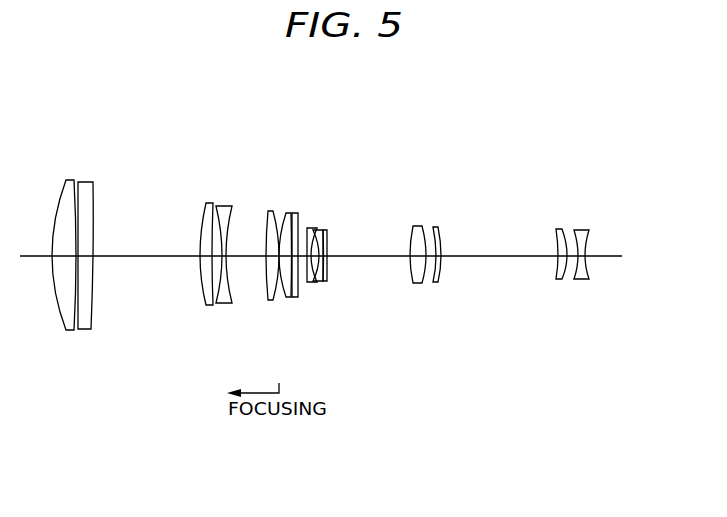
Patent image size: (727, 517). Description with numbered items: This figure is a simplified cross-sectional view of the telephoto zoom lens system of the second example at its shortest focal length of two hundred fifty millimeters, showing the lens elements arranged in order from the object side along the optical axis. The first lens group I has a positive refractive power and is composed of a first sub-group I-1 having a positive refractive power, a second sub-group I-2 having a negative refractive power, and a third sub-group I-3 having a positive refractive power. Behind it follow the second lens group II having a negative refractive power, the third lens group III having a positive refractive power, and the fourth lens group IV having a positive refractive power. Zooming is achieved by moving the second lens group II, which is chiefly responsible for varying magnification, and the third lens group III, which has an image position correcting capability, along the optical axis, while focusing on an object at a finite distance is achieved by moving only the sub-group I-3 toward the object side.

The first lens group I is at (175, 241).
The first sub-group I-1 is at (51, 334).
The second sub-group I-2 is at (195, 308).
The third sub-group I-3 is at (262, 308).
The second lens group II is at (331, 288).
The third lens group III is at (426, 290).
The fourth lens group IV is at (593, 290).